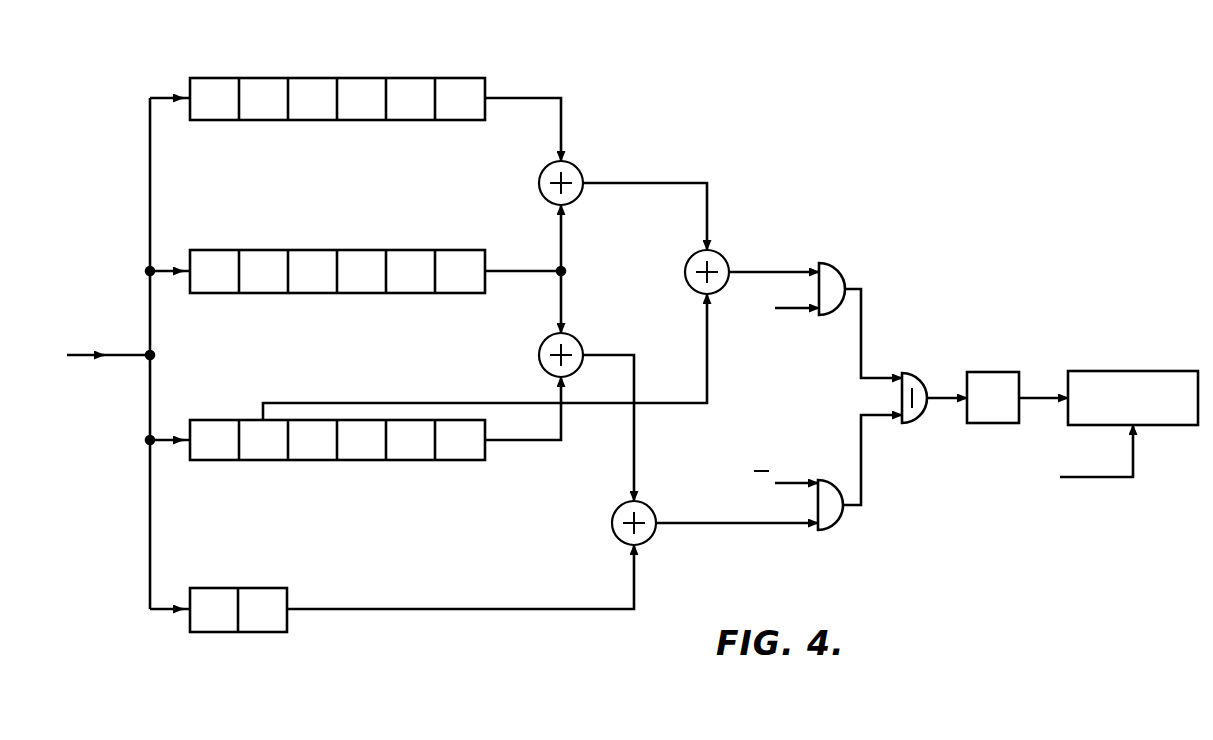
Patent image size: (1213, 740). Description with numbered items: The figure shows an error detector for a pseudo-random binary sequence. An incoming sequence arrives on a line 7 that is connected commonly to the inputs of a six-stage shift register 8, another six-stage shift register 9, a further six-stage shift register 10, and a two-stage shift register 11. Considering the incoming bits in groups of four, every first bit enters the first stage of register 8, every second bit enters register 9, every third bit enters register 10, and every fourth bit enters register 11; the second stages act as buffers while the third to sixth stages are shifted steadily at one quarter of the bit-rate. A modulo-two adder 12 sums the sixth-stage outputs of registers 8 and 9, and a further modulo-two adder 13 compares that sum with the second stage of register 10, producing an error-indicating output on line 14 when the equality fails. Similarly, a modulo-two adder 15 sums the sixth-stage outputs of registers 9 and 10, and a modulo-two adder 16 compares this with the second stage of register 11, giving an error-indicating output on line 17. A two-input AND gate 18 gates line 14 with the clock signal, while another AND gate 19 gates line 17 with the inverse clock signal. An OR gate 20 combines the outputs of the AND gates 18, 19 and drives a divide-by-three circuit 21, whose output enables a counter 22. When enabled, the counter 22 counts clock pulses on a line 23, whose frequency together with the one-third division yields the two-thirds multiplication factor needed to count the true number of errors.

The line 7 is at (80, 353).
The six-stage shift register 8 is at (475, 78).
The six-stage shift register 9 is at (455, 250).
The six-stage shift register 10 is at (485, 426).
The two-stage shift register 11 is at (273, 588).
The modulo-2 adder 12 is at (575, 167).
The modulo-2 adder 13 is at (692, 284).
The line 14 is at (760, 271).
The modulo-2 adder 15 is at (592, 320).
The modulo-2 adder 16 is at (652, 512).
The line 17 is at (712, 522).
The two-input AND gate 18 is at (836, 264).
The two-input AND gate 19 is at (822, 480).
The OR gate 20 is at (926, 359).
The divide-by-three circuit 21 is at (988, 371).
The counter 22 is at (1135, 371).
The line 23 is at (1134, 455).